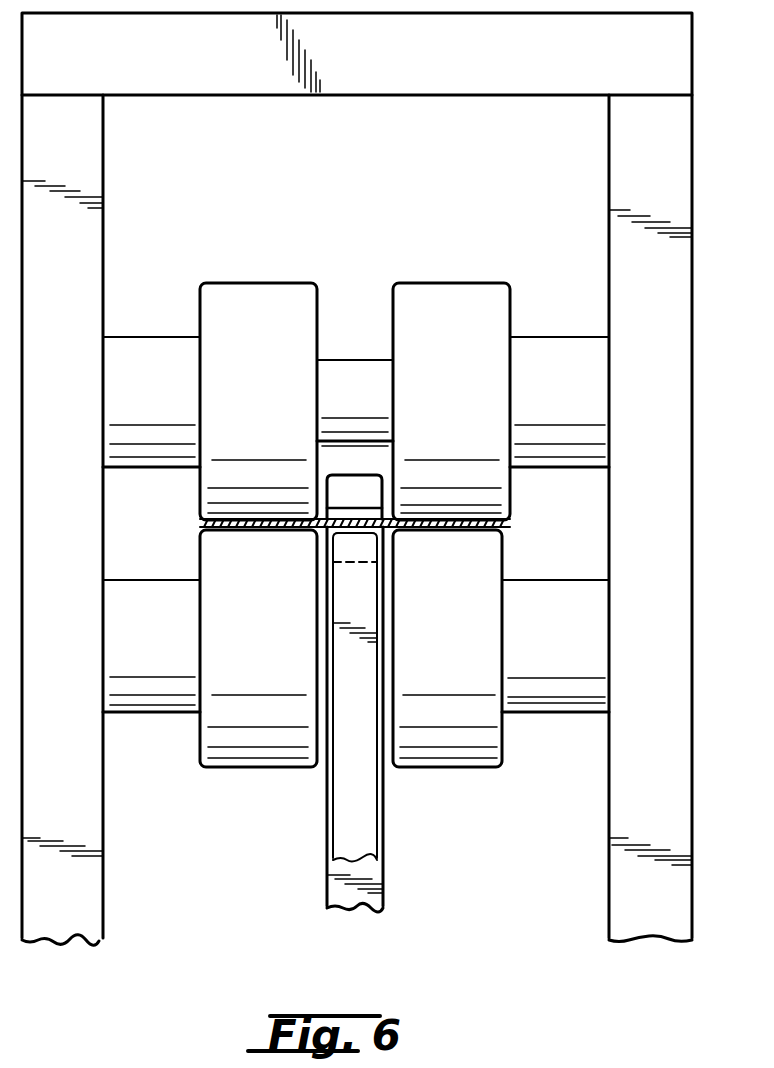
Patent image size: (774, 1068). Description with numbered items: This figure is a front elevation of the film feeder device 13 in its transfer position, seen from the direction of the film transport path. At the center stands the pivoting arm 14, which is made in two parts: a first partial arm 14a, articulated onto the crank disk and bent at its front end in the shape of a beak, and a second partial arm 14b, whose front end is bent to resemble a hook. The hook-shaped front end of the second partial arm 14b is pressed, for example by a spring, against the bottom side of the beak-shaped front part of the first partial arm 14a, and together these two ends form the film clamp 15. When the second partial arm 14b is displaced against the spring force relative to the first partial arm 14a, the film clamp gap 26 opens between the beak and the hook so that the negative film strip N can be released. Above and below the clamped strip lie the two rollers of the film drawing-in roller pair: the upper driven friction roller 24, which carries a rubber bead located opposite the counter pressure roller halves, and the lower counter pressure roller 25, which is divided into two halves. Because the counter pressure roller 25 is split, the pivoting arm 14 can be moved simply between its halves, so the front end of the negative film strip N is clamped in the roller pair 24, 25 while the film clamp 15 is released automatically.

The film feeder device 13 is at (700, 858).
The upper driven friction roller 24 is at (264, 295).
The lower counter pressure roller 25 is at (237, 768).
The negative film strip N is at (458, 528).
The pivoting arm 14 is at (344, 651).
The first partial arm 14a is at (368, 492).
The second partial arm 14b is at (362, 808).
The film clamp 15 is at (327, 468).
The film clamp gap 26 is at (352, 528).